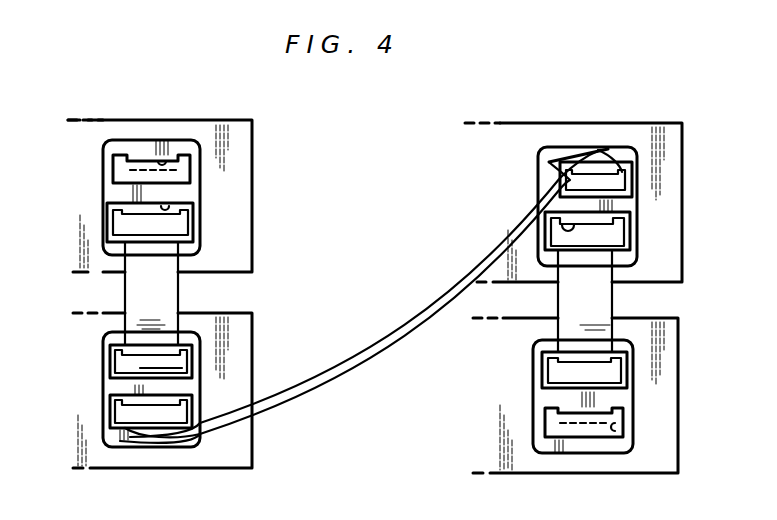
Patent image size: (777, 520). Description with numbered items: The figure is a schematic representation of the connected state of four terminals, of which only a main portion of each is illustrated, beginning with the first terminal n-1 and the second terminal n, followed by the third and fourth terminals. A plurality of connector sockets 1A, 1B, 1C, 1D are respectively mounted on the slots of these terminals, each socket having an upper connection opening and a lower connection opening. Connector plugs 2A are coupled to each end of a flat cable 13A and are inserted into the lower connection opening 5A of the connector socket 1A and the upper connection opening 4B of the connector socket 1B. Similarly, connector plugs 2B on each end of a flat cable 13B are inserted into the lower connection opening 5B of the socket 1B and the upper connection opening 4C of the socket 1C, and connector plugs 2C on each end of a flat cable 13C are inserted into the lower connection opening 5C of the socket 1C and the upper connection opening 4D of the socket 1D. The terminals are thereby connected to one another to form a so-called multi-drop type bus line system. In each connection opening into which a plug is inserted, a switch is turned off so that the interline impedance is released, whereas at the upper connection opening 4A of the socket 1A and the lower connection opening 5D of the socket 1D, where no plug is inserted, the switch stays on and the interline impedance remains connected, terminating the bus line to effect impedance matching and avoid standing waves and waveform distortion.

The first terminal n-1 is at (108, 128).
The second terminal n is at (122, 460).
The connector socket 1A is at (210, 154).
The connector socket 1B is at (208, 334).
The connector socket 1C is at (645, 149).
The connector socket 1D is at (642, 351).
The connector plug 2A is at (182, 222).
The connector plug 2B is at (122, 412).
The connector plug 2C is at (620, 240).
The upper connection opening 4A is at (165, 160).
The upper connection opening 4B is at (147, 349).
The upper connection opening 4C is at (548, 150).
The upper connection opening 4D is at (565, 358).
The lower connection opening 5A is at (178, 203).
The lower connection opening 5B is at (235, 420).
The lower connection opening 5C is at (573, 222).
The lower connection opening 5D is at (615, 427).
The flat cable 13A is at (170, 287).
The flat cable 13B is at (292, 394).
The flat cable 13C is at (600, 302).